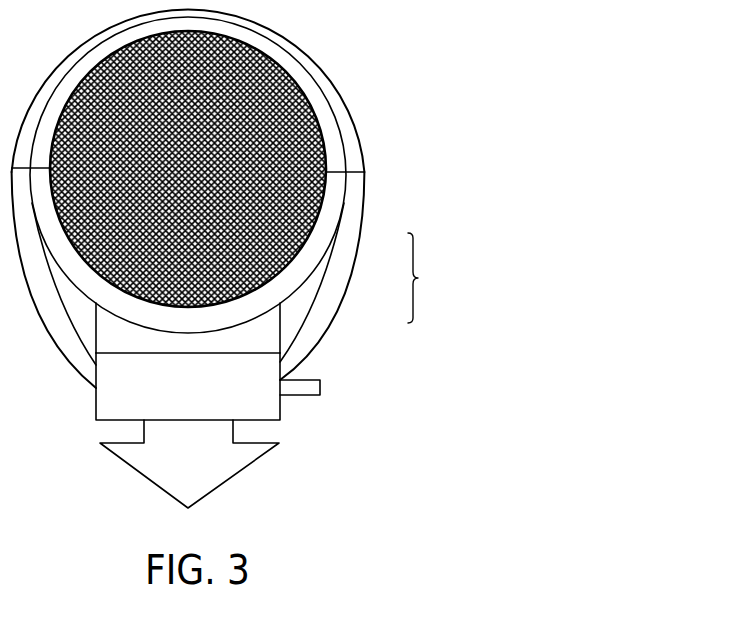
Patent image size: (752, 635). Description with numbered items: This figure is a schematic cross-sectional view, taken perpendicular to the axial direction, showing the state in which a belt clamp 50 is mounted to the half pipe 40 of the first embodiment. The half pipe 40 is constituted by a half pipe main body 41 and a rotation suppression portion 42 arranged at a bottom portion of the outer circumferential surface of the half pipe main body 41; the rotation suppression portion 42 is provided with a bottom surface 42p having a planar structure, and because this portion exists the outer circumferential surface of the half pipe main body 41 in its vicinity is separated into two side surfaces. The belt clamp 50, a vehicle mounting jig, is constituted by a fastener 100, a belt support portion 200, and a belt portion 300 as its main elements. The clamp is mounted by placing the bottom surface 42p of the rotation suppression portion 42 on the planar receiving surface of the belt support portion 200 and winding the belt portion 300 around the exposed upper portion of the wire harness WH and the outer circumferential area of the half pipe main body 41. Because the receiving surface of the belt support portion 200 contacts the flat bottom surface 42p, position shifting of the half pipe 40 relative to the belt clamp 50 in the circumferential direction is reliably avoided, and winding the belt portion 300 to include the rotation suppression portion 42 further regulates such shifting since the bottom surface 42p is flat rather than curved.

The wire harness WH is at (283, 93).
The belt portion 300 is at (342, 128).
The half pipe main body 41 is at (328, 225).
The rotation suppression portion 42 is at (267, 335).
The half pipe 40 is at (429, 278).
The bottom surface 42p is at (224, 355).
The belt support portion 200 is at (282, 409).
The fastener 100 is at (235, 473).
The belt clamp 50 is at (347, 473).